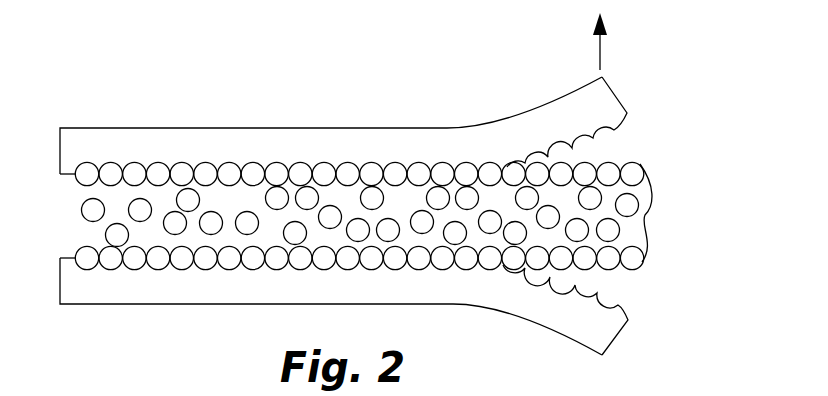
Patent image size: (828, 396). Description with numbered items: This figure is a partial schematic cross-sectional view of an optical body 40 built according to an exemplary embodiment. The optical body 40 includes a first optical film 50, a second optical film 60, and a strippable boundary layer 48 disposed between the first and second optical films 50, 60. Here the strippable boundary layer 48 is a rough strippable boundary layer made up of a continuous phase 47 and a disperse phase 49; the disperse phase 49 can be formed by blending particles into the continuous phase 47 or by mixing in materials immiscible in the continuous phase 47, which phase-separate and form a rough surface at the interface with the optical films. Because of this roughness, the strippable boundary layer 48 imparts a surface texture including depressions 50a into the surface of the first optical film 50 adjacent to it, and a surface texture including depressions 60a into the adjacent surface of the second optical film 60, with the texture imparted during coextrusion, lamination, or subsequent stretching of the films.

The optical body 40 is at (130, 88).
The continuous phase 47 is at (638, 227).
The strippable boundary layer 48 is at (662, 193).
The disperse phase 49 is at (513, 170).
The first optical film 50 is at (70, 148).
The depressions 50a is at (604, 128).
The second optical film 60 is at (67, 287).
The depressions 60a is at (602, 299).